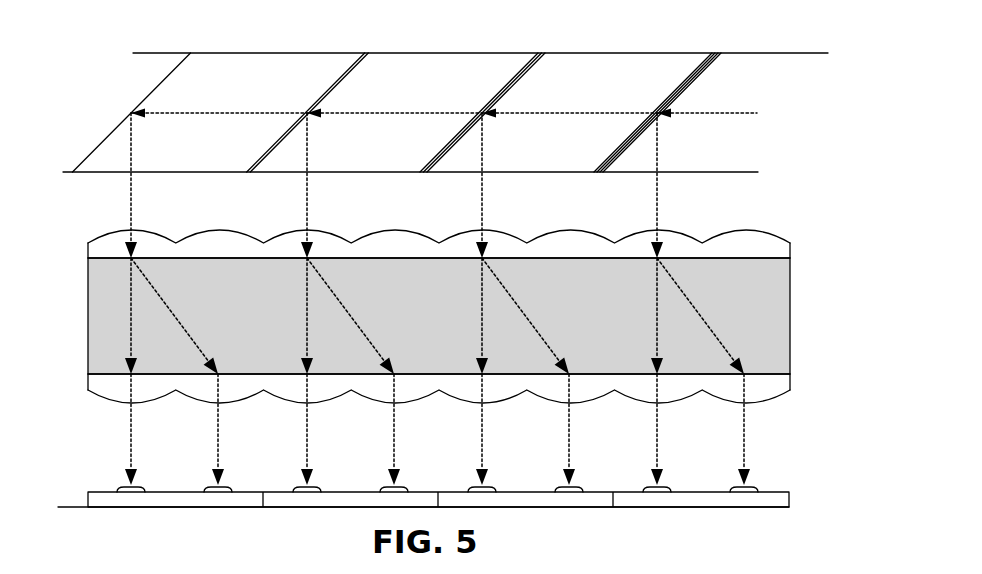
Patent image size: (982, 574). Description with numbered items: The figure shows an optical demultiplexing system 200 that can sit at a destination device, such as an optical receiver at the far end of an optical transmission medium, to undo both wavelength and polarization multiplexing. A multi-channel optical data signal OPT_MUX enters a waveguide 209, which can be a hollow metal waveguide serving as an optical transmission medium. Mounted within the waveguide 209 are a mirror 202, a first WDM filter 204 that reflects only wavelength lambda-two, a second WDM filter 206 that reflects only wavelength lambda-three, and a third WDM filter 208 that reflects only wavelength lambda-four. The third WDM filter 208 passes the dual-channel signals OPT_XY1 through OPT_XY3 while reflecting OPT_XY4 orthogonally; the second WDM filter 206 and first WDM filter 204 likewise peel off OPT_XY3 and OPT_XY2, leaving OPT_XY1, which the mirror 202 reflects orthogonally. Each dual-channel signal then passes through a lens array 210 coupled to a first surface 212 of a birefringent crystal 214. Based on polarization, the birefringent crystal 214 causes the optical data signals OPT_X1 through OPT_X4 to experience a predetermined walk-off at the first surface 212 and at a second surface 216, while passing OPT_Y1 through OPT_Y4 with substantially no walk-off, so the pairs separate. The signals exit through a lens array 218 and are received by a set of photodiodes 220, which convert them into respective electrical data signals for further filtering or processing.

The optical demultiplexing system 200 is at (138, 33).
The mirror 202 is at (147, 98).
The first WDM filter 204 is at (329, 88).
The second WDM filter 206 is at (507, 85).
The third WDM filter 208 is at (680, 87).
The waveguide 209 is at (618, 53).
The lens array 210 is at (125, 231).
The first surface 212 is at (767, 258).
The birefringent crystal 214 is at (745, 258).
The second surface 216 is at (767, 374).
The lens array 218 is at (125, 402).
The photodiodes 220 is at (736, 490).